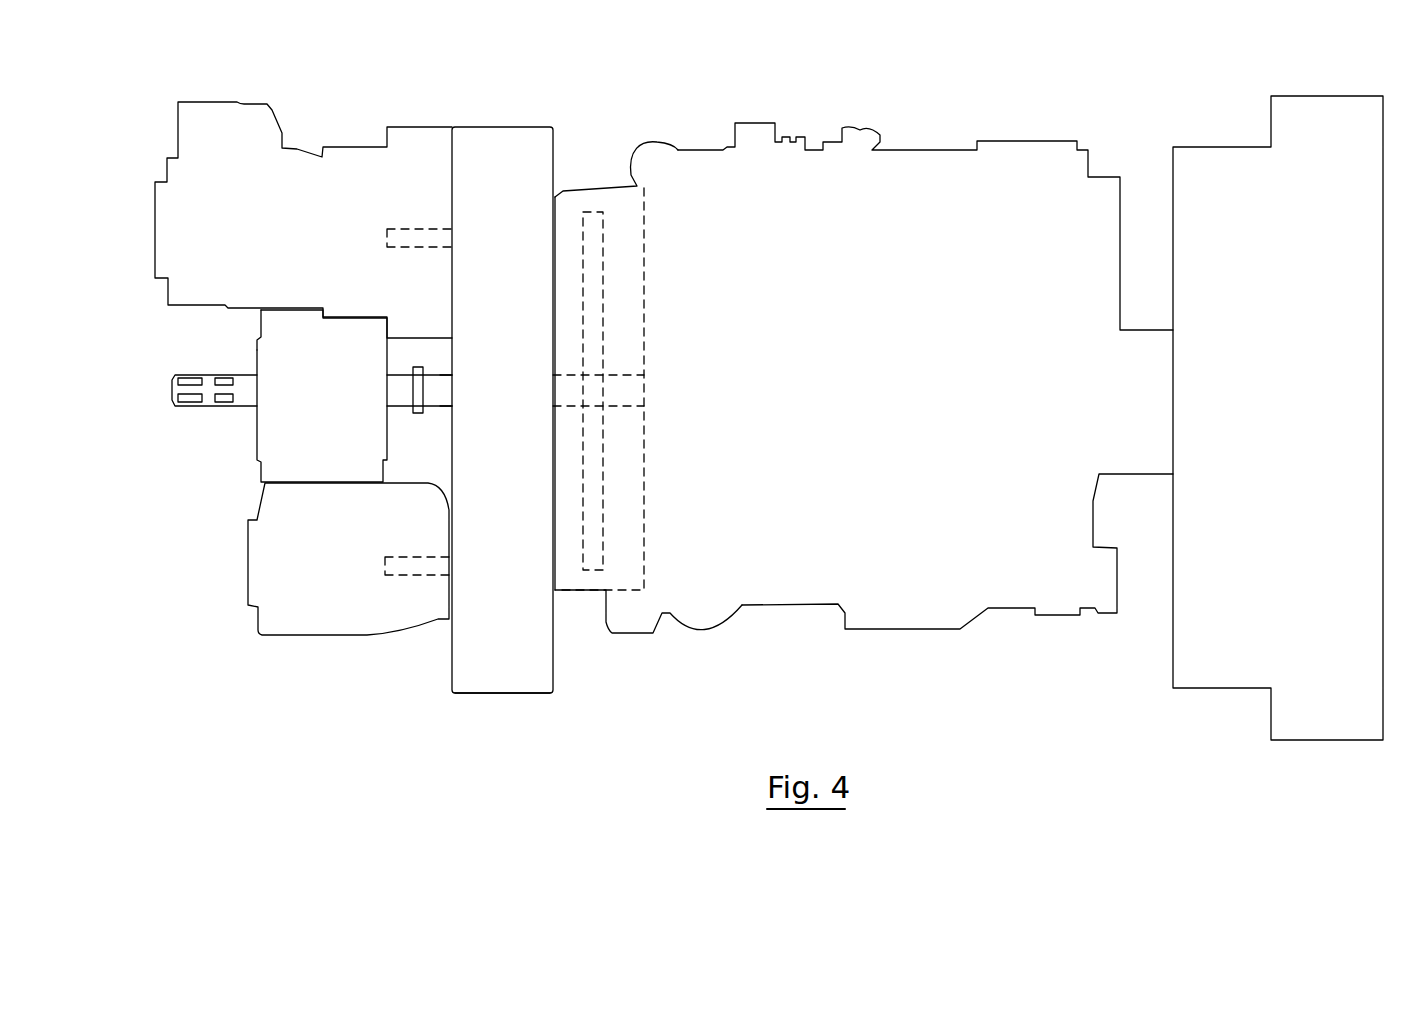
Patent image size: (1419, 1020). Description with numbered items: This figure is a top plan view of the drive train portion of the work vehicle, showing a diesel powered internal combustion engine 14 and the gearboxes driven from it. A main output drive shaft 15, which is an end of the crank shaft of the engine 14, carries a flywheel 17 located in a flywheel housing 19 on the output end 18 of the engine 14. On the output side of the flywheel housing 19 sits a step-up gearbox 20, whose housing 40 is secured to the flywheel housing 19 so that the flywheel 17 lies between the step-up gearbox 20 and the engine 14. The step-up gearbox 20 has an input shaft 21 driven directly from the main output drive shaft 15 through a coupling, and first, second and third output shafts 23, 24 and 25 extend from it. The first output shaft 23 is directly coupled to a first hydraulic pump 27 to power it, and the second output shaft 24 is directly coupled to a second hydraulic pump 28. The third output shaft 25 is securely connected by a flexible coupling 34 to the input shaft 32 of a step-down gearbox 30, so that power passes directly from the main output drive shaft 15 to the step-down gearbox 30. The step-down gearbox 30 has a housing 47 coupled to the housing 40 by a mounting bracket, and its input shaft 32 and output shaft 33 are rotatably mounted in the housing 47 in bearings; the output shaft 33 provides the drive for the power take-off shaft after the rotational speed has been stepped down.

The internal combustion engine 14 is at (920, 177).
The main output drive shaft 15 is at (617, 375).
The flywheel 17 is at (595, 263).
The output end 18 is at (610, 622).
The flywheel housing 19 is at (592, 186).
The step-up gearbox 20 is at (510, 130).
The input shaft 21 is at (587, 337).
The first output shaft 23 is at (422, 228).
The second output shaft 24 is at (407, 570).
The third output shaft 25 is at (437, 388).
The first hydraulic pump 27 is at (222, 115).
The second hydraulic pump 28 is at (282, 623).
The step-down gearbox 30 is at (272, 445).
The input shaft 32 is at (396, 392).
The output shaft 33 is at (212, 393).
The flexible coupling 34 is at (420, 415).
The housing 40 is at (493, 673).
The housing 47 is at (277, 343).